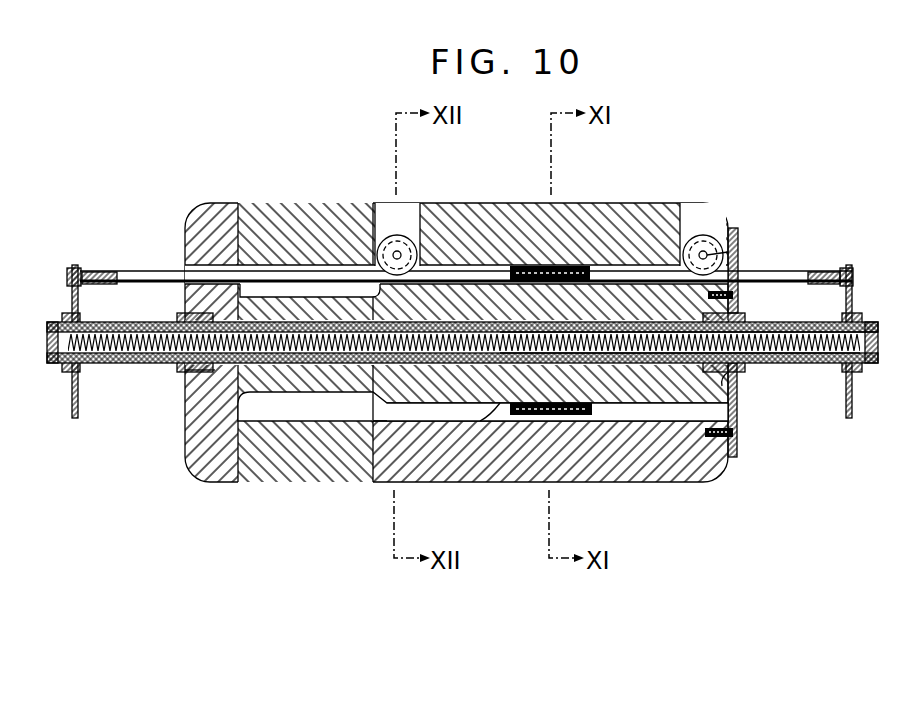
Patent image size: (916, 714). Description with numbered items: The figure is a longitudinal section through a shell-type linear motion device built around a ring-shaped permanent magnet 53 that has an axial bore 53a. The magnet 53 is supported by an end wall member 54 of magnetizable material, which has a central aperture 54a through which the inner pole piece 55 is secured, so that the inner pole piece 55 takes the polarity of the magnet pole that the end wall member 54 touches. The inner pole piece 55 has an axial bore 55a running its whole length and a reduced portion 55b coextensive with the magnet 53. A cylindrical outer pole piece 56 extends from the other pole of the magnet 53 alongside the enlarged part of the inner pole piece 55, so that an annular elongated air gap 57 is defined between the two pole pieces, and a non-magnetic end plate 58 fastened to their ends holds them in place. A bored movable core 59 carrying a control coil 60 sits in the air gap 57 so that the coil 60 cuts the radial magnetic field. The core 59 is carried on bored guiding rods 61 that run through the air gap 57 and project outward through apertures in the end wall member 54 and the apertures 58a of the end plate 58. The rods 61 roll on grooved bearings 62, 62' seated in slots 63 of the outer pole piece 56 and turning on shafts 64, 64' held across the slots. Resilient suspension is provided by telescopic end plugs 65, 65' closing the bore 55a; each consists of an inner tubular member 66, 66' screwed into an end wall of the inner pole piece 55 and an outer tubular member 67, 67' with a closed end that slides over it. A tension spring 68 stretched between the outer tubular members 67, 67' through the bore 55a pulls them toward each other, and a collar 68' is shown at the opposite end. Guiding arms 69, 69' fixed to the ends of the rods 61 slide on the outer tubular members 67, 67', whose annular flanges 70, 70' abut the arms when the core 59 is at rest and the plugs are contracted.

The permanent magnet 53 is at (297, 483).
The axial bore 53a is at (319, 400).
The end wall member 54 is at (213, 483).
The shoulder of end block 54a is at (188, 372).
The inner pole piece 55 is at (447, 407).
The axial bore 55a is at (481, 352).
The reduced portion 55b is at (258, 397).
The outer pole piece 56 is at (690, 483).
The air gap 57 is at (643, 410).
The end plate 58 is at (737, 406).
The apertures 58a is at (725, 374).
The movable core 59 is at (500, 410).
The control coil 60 is at (566, 411).
The guiding rods 61 is at (122, 272).
The bearing 62 is at (407, 222).
The bearing 62' is at (723, 222).
The slot 63 is at (385, 208).
The shaft 64 is at (425, 243).
The shaft 64' is at (756, 267).
The telescopic end plug 65 is at (464, 379).
The telescopic end plug 65' is at (680, 397).
The inner tubular member 66 is at (179, 332).
The inner tubular member 66' is at (760, 332).
The outer tubular member 67 is at (462, 373).
The outer tubular member 67' is at (689, 369).
The tension spring 68 is at (91, 332).
The collar 68' is at (873, 331).
The guiding arm 69 is at (54, 341).
The guiding arm 69' is at (877, 351).
The annular flange 70 is at (38, 324).
The annular flange 70' is at (882, 360).